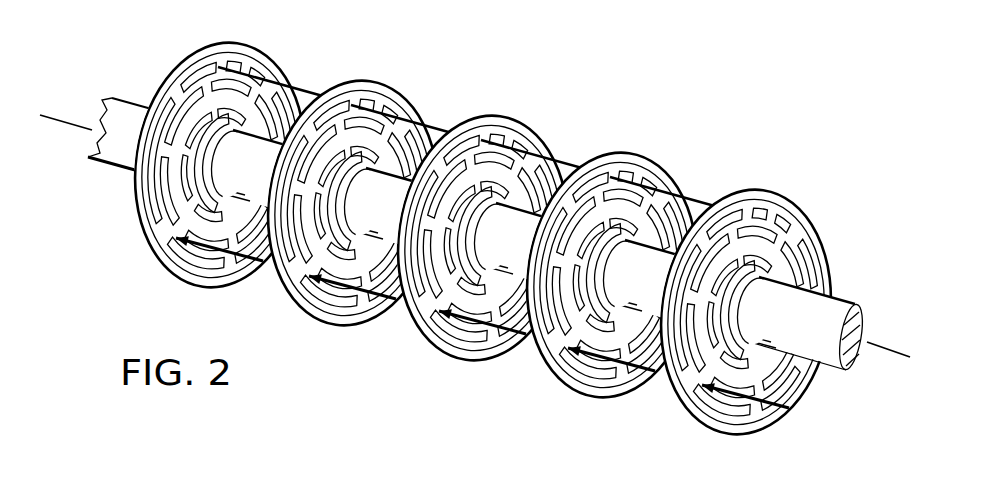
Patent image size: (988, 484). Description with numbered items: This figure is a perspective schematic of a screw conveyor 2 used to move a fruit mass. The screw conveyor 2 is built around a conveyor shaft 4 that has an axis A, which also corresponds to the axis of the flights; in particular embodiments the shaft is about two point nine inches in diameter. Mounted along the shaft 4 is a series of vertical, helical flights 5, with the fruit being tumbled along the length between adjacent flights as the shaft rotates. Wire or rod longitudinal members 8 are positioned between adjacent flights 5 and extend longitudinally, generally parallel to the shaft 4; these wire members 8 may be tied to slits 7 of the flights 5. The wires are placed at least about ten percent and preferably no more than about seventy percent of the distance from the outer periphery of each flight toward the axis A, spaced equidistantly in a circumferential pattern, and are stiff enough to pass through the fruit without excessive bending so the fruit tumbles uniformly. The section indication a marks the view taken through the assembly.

The screw conveyor 2 is at (706, 60).
The conveyor shaft 4 is at (125, 112).
The helical flights 5 is at (165, 262).
The slits 7 is at (240, 60).
The wire or rod longitudinal members 8 is at (290, 85).
The axis A is at (886, 350).
The section line a is at (344, 193).